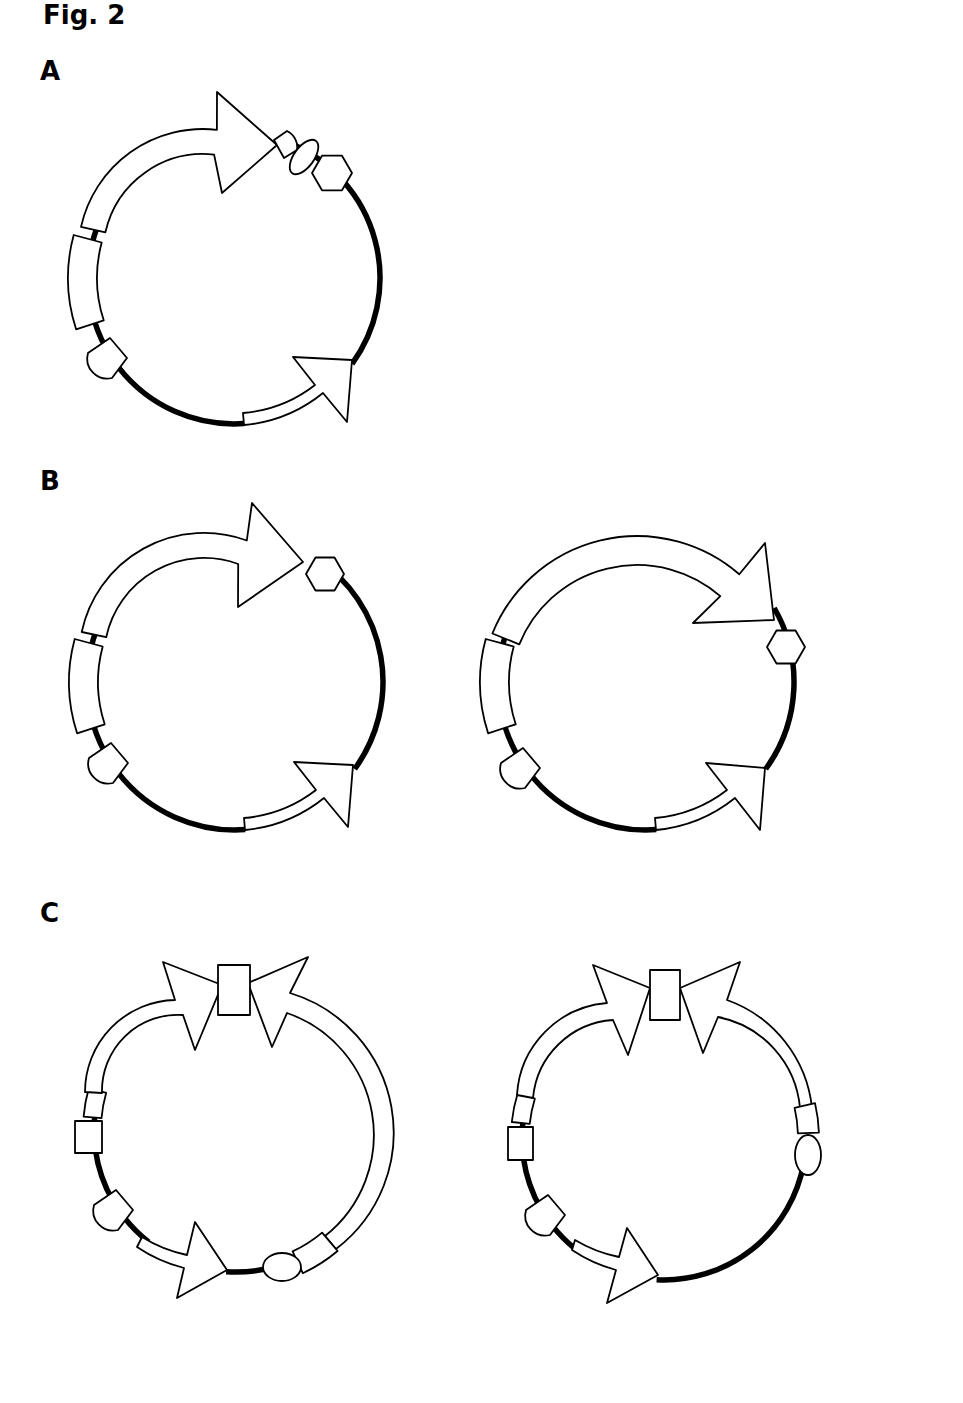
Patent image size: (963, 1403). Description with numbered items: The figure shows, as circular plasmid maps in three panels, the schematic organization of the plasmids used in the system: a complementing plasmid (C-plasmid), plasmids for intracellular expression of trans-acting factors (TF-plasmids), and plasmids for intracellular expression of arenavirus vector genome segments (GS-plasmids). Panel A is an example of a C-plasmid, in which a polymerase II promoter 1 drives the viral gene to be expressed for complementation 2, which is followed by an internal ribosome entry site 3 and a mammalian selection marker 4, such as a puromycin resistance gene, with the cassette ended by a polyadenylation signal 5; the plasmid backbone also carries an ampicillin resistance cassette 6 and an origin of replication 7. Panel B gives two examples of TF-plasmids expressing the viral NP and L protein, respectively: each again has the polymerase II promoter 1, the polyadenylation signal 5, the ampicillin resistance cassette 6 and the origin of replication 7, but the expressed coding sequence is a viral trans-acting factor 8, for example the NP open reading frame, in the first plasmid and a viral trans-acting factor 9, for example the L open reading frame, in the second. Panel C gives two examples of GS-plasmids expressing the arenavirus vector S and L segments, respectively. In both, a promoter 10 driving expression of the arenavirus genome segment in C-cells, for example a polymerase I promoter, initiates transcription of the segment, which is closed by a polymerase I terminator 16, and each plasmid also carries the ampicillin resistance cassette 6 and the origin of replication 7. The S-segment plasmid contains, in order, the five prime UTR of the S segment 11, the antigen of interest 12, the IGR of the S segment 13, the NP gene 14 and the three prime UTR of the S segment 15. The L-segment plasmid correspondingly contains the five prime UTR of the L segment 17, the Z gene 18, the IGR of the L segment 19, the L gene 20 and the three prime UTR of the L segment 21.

The polymerase II promoter 1 is at (275, 484).
The viral gene to be expressed for complementation 2 is at (179, 162).
The internal ribosome entry site 3 is at (287, 126).
The mammalian selection marker 4 is at (314, 142).
The polyadenylation signal 5 is at (558, 403).
The ampicillin resistance cassette 6 is at (451, 830).
The origin of replication 7 is at (318, 796).
The viral trans-acting factor 8 is at (192, 570).
The viral trans-acting factor 9 is at (633, 572).
The promoter driving expression of arenavirus genome segment 10 is at (285, 1140).
The 5' UTR of the S segment 11 is at (76, 1102).
The antigen of interest 12 is at (153, 1027).
The IGR of the S segment 13 is at (233, 973).
The NP gene 14 is at (340, 1103).
The 3' UTR of the S segment 15 is at (325, 1264).
The polymerase I terminator 16 is at (562, 1225).
The 5' UTR of the L segment 17 is at (506, 1106).
The Z gene 18 is at (583, 1031).
The IGR of the L segment 19 is at (665, 977).
The L gene 20 is at (757, 1035).
The 3' UTR of the L segment 21 is at (827, 1122).